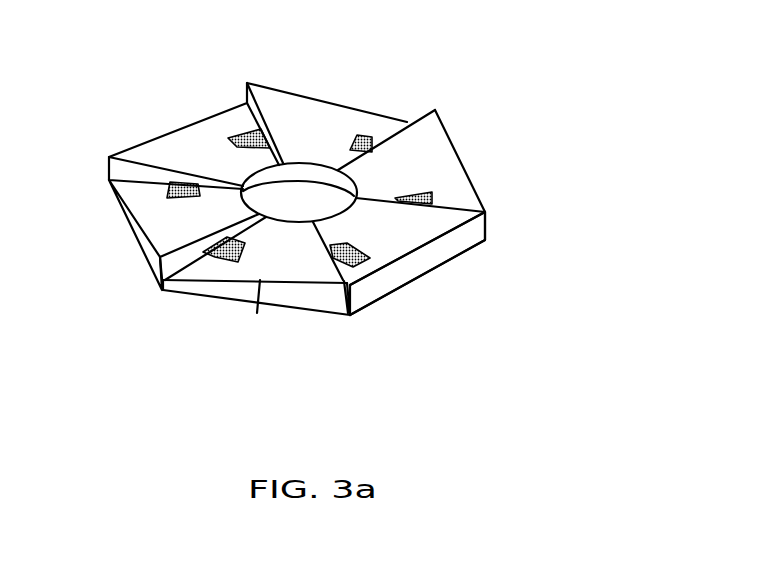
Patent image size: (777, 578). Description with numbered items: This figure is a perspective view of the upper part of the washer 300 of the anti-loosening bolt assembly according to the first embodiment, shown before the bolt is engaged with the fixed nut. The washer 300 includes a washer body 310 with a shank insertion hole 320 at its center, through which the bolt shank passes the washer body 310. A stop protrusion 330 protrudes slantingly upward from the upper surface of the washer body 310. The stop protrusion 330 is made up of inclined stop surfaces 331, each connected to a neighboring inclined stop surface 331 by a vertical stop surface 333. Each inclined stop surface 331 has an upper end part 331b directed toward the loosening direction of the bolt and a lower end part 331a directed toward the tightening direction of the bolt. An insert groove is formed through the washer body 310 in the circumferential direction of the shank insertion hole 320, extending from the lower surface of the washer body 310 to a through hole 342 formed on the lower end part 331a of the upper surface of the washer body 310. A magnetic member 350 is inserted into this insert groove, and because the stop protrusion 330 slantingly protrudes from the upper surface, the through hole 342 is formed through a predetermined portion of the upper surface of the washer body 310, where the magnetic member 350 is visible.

The washer 300 is at (504, 80).
The washer body 310 is at (143, 257).
The shank insertion hole 320 is at (303, 172).
The stop protrusion 330 is at (385, 378).
The inclined stop surface 331 is at (257, 313).
The lower end part of the inclined stop surface 331a is at (168, 292).
The upper end part of the inclined stop surface 331b is at (342, 287).
The vertical stop surface 333 is at (354, 315).
The through hole 342 is at (165, 198).
The magnetic member 350 is at (174, 180).